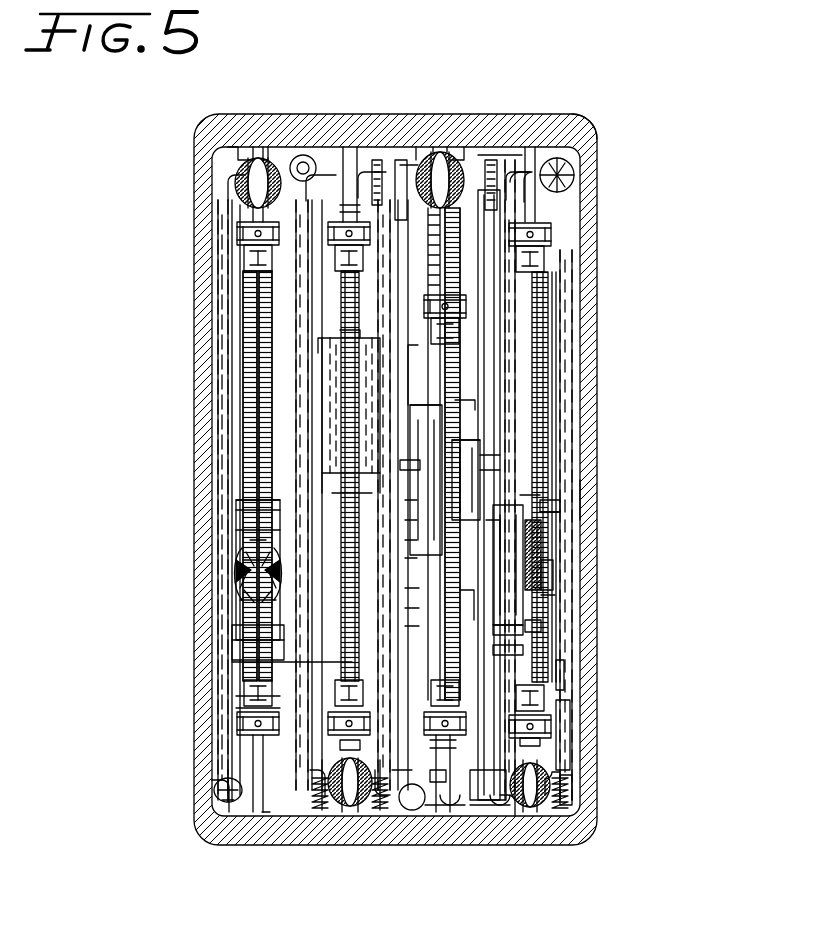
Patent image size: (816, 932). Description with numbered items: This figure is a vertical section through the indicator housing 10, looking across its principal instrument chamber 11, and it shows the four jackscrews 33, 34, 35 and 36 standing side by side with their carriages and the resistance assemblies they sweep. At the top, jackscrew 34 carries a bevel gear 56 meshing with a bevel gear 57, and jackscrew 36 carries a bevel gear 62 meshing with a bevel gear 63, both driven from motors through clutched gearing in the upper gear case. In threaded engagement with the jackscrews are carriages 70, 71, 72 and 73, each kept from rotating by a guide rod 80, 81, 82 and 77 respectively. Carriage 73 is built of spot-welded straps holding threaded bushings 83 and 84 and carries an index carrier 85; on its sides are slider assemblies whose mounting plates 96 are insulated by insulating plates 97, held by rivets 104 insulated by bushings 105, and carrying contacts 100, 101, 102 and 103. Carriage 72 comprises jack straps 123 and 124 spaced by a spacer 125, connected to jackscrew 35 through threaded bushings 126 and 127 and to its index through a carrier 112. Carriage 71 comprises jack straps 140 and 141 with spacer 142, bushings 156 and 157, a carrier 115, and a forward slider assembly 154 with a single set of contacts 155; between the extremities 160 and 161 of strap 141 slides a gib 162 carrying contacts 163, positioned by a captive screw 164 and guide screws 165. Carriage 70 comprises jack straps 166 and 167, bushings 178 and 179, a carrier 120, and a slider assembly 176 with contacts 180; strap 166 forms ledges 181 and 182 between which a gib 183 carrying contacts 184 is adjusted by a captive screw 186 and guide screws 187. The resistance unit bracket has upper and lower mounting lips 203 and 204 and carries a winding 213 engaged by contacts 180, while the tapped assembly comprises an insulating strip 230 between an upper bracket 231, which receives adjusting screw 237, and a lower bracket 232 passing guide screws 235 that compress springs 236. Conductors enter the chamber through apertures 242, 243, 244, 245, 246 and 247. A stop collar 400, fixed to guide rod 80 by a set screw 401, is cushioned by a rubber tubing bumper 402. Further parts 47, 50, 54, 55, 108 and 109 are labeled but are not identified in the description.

The housing 10 is at (200, 247).
The principal instrument chamber 11 is at (272, 808).
The jackscrew 33 is at (560, 348).
The jackscrew 34 is at (560, 382).
The jackscrew 35 is at (345, 665).
The jackscrew 36 is at (245, 660).
The gear 47 is at (540, 800).
The support 50 is at (580, 765).
The gear 54 is at (334, 800).
The collar 55 is at (360, 745).
The bevel gear 56 is at (442, 155).
The bevel gear 57 is at (450, 160).
The bevel gear 62 is at (266, 160).
The bevel gear 63 is at (270, 195).
The carriage 70 is at (592, 500).
The carriage 71 is at (472, 405).
The carriage 72 is at (396, 338).
The carriage 73 is at (240, 520).
The guide rod 77 is at (228, 462).
The guide rod 80 is at (500, 328).
The guide rod 81 is at (465, 305).
The guide rod 82 is at (338, 270).
The bushing 83 is at (240, 505).
The bushing 84 is at (255, 650).
The index carrier 85 is at (240, 540).
The mounting plate 96 is at (278, 596).
The insulating plate 97 is at (282, 604).
The contact 100 is at (240, 604).
The contact 101 is at (240, 588).
The contact member 102 is at (288, 568).
The contact member 103 is at (290, 554).
The rivet 104 is at (226, 582).
The bushing 105 is at (236, 560).
The plate 108 is at (236, 700).
The plate 109 is at (236, 718).
The carrier 112 is at (252, 376).
The carrier 115 is at (412, 526).
The carrier 120 is at (555, 600).
The jack strap 123 is at (335, 348).
The jack strap 124 is at (240, 432).
The spacer 125 is at (266, 398).
The threaded bushing 126 is at (372, 352).
The threaded bushing 127 is at (330, 490).
The jack strap 140 is at (412, 545).
The jack strap 141 is at (457, 608).
The spacer 142 is at (428, 455).
The slider assembly 154 is at (405, 470).
The set of contacts 155 is at (410, 503).
The threaded bushing 156 is at (422, 408).
The threaded bushing 157 is at (412, 562).
The upper outward extremity 160 is at (480, 438).
The lower outward extremity 161 is at (500, 565).
The gib 162 is at (520, 462).
The set of contacts 163 is at (478, 460).
The captive screw 164 is at (500, 455).
The guide screw 165 is at (415, 590).
The jack strap 166 is at (541, 630).
The jack strap 167 is at (560, 506).
The slider assembly 176 is at (553, 577).
The threaded bushing 178 is at (525, 497).
The threaded bushing 179 is at (564, 676).
The set of contacts 180 is at (541, 548).
The upper ledge 181 is at (500, 476).
The lower ledge 182 is at (505, 626).
The gib 183 is at (415, 610).
The set of contacts 184 is at (415, 628).
The captive screw 186 is at (562, 520).
The guide screw 187 is at (515, 652).
The upper mounting lip 203 is at (574, 172).
The lower mounting lip 204 is at (565, 792).
The winding 213 is at (562, 276).
The strip 230 is at (548, 326).
The upper mounting bracket 231 is at (520, 178).
The lower mounting bracket 232 is at (440, 778).
The guide screw 235 is at (442, 800).
The spring 236 is at (432, 810).
The adjusting screw 237 is at (495, 160).
The aperture 242 is at (306, 155).
The aperture 243 is at (395, 160).
The aperture 244 is at (597, 137).
The aperture 245 is at (215, 800).
The aperture 246 is at (405, 810).
The aperture 247 is at (482, 805).
The collar 400 is at (560, 745).
The set screw 401 is at (560, 730).
The rubber tubing 402 is at (560, 715).